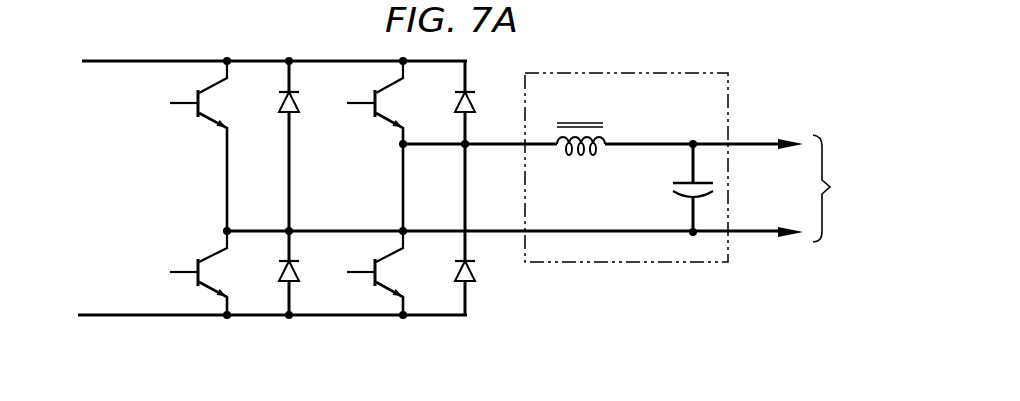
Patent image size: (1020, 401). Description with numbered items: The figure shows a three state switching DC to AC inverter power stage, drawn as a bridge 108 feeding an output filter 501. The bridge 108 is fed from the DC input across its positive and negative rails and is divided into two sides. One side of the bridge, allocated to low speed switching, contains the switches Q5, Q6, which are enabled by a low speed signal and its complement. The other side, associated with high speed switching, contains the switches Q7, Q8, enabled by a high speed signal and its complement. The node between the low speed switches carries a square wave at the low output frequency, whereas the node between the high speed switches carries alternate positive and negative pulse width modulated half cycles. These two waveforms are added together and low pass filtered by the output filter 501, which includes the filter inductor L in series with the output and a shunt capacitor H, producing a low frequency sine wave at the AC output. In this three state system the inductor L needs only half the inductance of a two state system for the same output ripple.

The inverter bridge 108 is at (895, 335).
The output filter 501 is at (625, 73).
The low speed switching device Q5 is at (274, 103).
The low speed switching device Q6 is at (274, 271).
The high speed switching device Q7 is at (451, 103).
The high speed switching device Q8 is at (451, 271).
The filter inductor L is at (581, 159).
The capacitor H is at (713, 189).